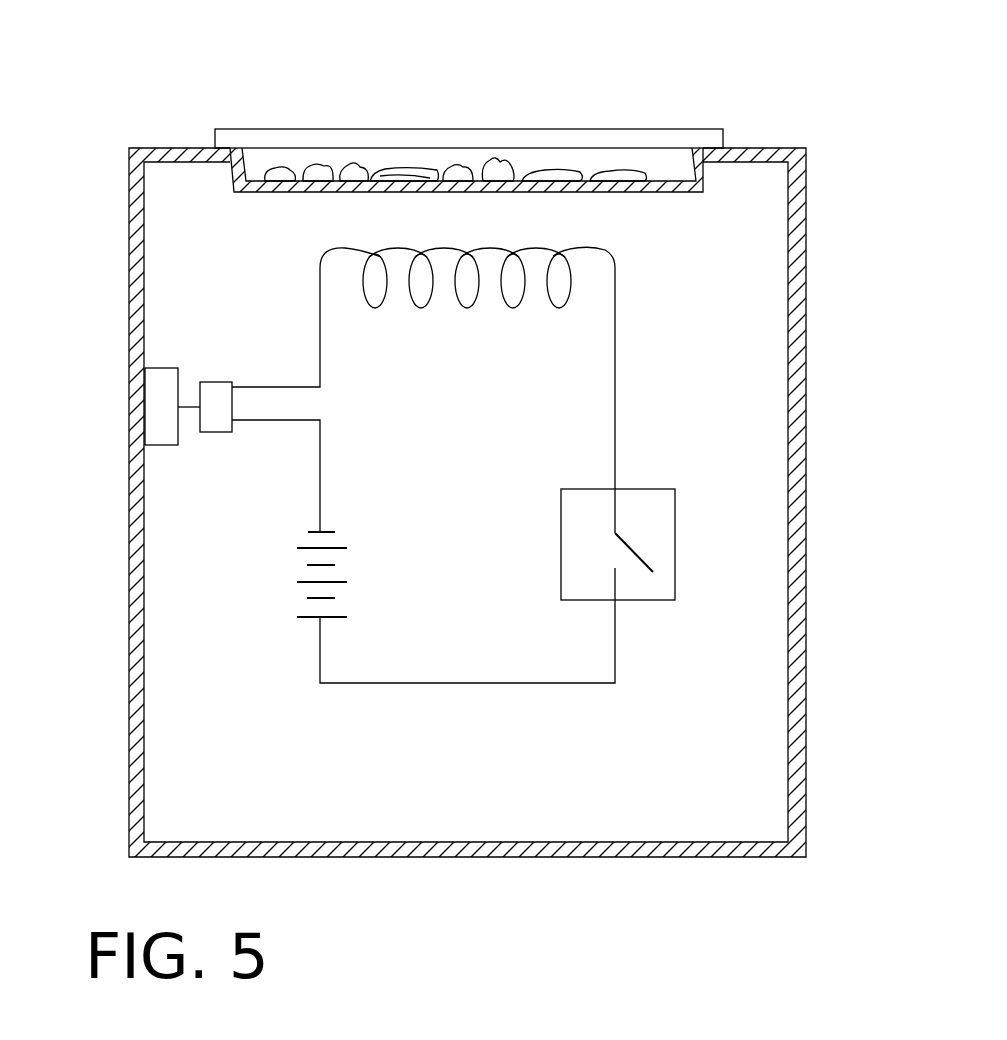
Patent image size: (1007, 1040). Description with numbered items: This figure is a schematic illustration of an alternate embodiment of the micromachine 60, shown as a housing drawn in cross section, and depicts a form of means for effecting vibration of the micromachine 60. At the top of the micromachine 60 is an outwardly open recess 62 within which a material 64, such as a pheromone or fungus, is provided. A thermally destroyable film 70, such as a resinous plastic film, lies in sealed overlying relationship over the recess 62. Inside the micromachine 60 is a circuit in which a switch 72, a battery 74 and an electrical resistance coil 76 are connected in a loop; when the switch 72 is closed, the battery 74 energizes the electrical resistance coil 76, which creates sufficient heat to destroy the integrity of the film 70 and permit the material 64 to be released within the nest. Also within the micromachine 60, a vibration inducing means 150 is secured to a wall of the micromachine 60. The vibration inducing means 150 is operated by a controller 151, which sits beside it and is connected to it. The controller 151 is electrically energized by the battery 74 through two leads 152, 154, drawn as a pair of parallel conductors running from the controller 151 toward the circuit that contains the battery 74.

The micromachine 60 is at (759, 120).
The outwardly open recess 62 is at (320, 152).
The material 64 is at (502, 160).
The thermally destroyable film 70 is at (377, 130).
The switch 72 is at (675, 542).
The battery 74 is at (303, 573).
The electrical resistance coil 76 is at (318, 270).
The vibration inducing means 150 is at (152, 345).
The controller 151 is at (212, 433).
The lead 152 is at (288, 422).
The lead 154 is at (262, 387).